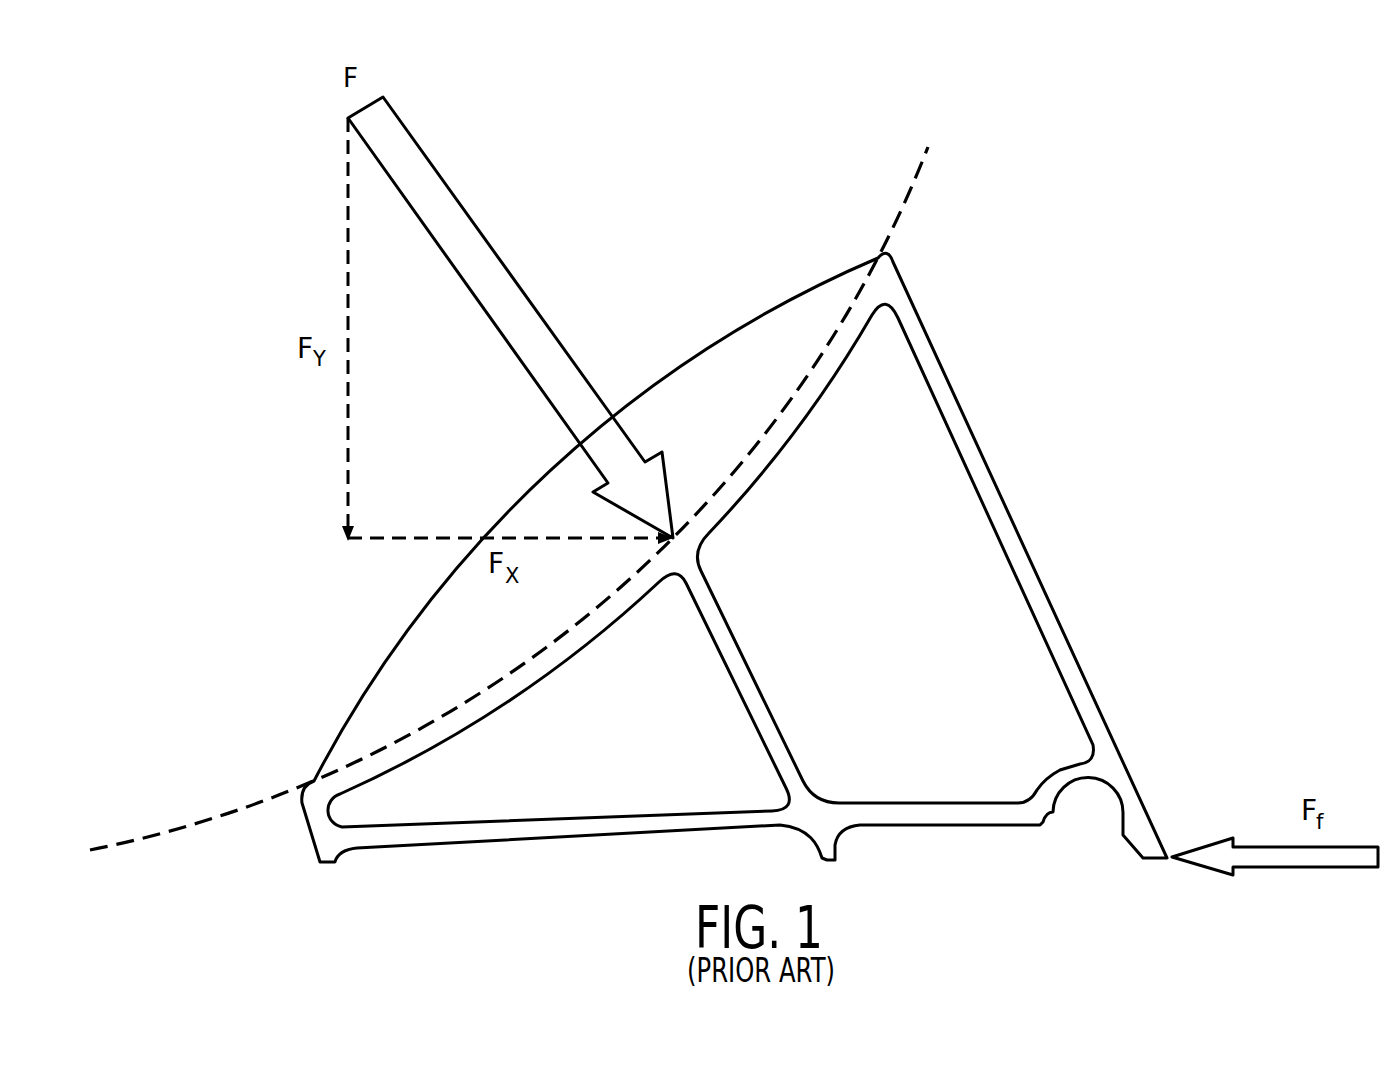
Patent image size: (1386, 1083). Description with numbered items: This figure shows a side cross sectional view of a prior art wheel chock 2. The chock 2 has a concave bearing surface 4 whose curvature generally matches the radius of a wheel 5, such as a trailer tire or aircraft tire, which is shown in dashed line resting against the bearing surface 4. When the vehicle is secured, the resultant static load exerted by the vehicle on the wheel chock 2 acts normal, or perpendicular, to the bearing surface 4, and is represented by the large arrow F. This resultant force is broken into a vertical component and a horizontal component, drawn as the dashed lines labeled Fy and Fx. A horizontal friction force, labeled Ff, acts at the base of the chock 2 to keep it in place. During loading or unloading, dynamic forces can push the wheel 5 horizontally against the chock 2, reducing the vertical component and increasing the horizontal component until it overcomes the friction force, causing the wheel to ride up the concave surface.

The wheel chock 2 is at (1062, 382).
The concave bearing surface 4 is at (383, 745).
The wheel 5 is at (897, 226).